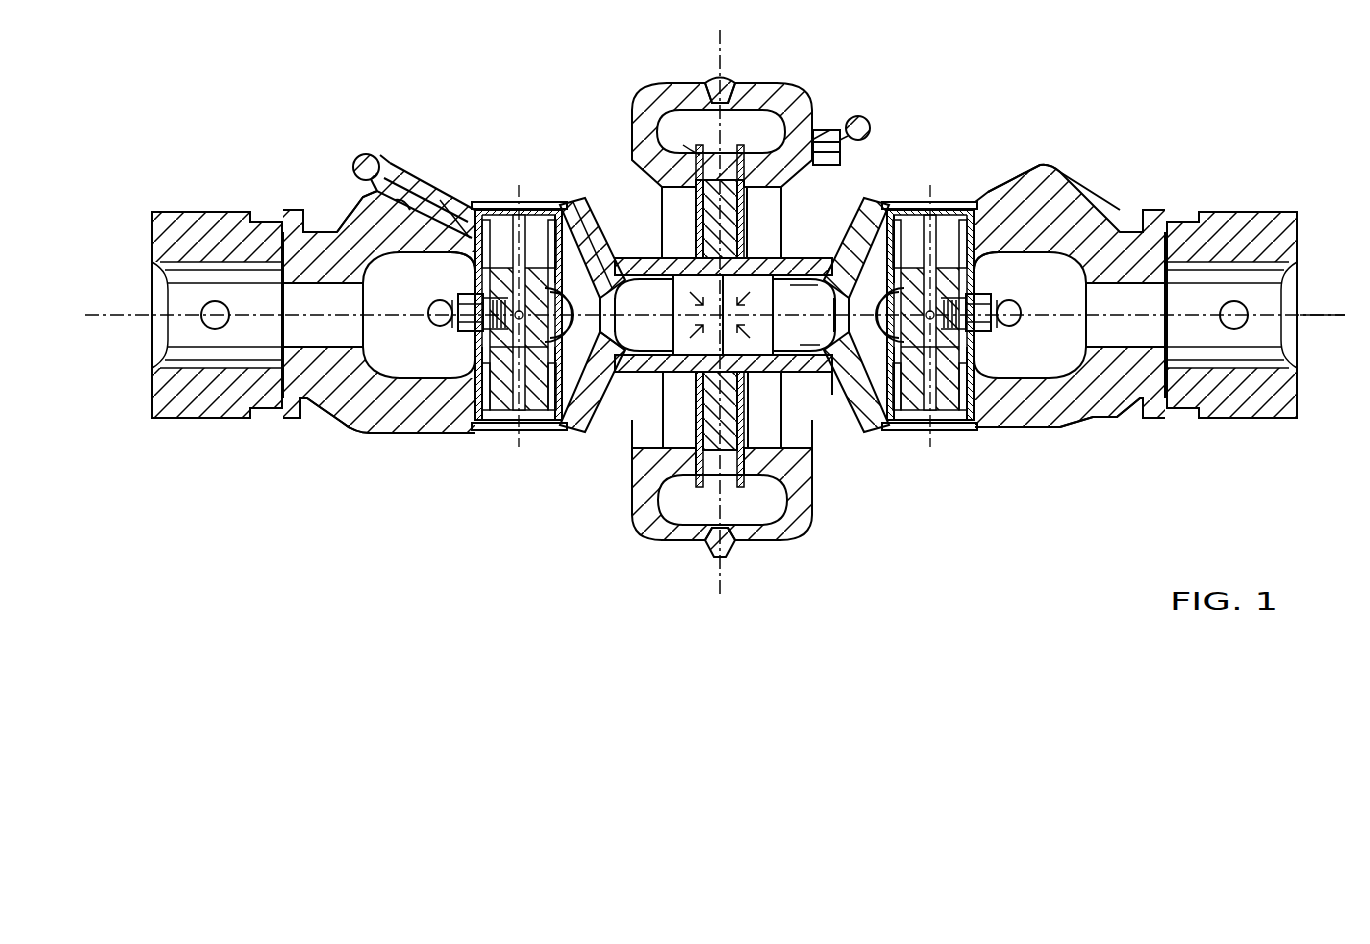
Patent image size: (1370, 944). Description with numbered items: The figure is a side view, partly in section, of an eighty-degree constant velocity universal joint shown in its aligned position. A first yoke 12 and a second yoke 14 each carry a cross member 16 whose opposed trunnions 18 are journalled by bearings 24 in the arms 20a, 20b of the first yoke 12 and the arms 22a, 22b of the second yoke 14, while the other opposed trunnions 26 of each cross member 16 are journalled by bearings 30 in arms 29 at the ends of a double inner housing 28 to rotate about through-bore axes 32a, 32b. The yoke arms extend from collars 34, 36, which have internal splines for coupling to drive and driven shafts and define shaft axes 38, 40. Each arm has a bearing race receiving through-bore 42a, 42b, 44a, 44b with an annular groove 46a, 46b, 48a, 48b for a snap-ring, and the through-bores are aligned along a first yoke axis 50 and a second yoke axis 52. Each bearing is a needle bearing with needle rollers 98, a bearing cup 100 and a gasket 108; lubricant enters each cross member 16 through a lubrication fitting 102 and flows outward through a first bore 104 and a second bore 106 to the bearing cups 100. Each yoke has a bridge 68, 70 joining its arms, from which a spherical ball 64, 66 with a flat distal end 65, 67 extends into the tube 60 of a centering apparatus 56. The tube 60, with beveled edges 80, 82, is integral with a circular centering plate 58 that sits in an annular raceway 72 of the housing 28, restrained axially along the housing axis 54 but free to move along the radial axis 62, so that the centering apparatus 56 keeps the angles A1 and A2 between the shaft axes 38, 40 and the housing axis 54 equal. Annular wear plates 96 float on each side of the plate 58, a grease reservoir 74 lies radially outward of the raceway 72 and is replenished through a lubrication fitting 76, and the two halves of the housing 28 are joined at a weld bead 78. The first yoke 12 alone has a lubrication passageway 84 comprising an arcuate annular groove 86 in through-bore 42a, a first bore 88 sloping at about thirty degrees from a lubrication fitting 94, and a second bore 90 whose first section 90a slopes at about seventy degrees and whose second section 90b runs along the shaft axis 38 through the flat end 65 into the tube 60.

The first yoke 12 is at (358, 433).
The second yoke 14 is at (1070, 440).
The cross member 16 is at (478, 338).
The trunnions 18 is at (368, 272).
The arm 20a is at (466, 188).
The arm 20b is at (448, 437).
The arm 22a is at (998, 185).
The arm 22b is at (985, 435).
The bearings 24 is at (592, 208).
The trunnions 26 is at (614, 306).
The double inner housing 28 is at (788, 90).
The arms 29 is at (440, 338).
The bearings 30 is at (555, 340).
The through-bore axis 32a is at (480, 293).
The through-bore axis 32b is at (965, 292).
The collar 34 is at (203, 201).
The collar 36 is at (1232, 210).
The shaft axis 38 is at (113, 318).
The shaft axis 40 is at (1336, 318).
The bearing race receiving through-bore 42a is at (484, 205).
The bearing race receiving through-bore 42b is at (485, 428).
The bearing race receiving through-bore 44a is at (968, 208).
The bearing race receiving through-bore 44b is at (915, 437).
The annular groove 46a is at (556, 205).
The annular groove 46b is at (558, 430).
The annular groove 48a is at (890, 205).
The annular groove 48b is at (932, 437).
The first yoke axis 50 is at (517, 198).
The second yoke axis 52 is at (935, 182).
The housing axis 54 is at (809, 315).
The centering apparatus 56 is at (652, 400).
The centering plate 58 is at (722, 172).
The tube 60 is at (810, 380).
The radial axis 62 is at (722, 38).
The spherical ball 64 is at (679, 410).
The flat distal end 65 is at (723, 306).
The spherical ball 66 is at (766, 410).
The flat distal end 67 is at (775, 332).
The bridge 68 is at (608, 228).
The bridge 70 is at (842, 238).
The annular raceway 72 is at (695, 525).
The grease reservoir 74 is at (680, 115).
The lubrication fitting 76 is at (862, 116).
The weld bead 78 is at (728, 78).
The beveled edge 80 is at (595, 400).
The beveled edge 82 is at (833, 380).
The lubrication passageway 84 is at (420, 178).
The annular groove 86 is at (465, 222).
The first bore 88 is at (405, 205).
The second bore 90 is at (598, 210).
The first section 90a is at (600, 258).
The second section 90b is at (633, 338).
The lubrication fitting 94 is at (350, 158).
The annular wear plate 96 is at (705, 165).
The needle rollers 98 is at (440, 262).
The bearing cup 100 is at (526, 198).
The lubrication fitting 102 is at (428, 306).
The first bore 104 is at (558, 432).
The second bore 106 is at (490, 385).
The gasket 108 is at (994, 272).
The angle A1 is at (691, 312).
The angle A2 is at (757, 312).